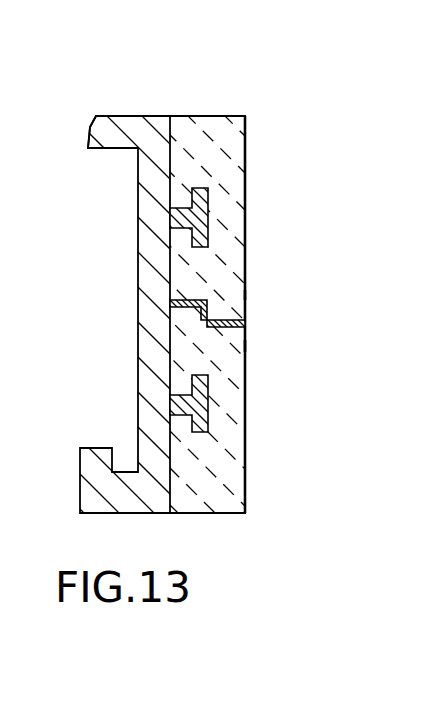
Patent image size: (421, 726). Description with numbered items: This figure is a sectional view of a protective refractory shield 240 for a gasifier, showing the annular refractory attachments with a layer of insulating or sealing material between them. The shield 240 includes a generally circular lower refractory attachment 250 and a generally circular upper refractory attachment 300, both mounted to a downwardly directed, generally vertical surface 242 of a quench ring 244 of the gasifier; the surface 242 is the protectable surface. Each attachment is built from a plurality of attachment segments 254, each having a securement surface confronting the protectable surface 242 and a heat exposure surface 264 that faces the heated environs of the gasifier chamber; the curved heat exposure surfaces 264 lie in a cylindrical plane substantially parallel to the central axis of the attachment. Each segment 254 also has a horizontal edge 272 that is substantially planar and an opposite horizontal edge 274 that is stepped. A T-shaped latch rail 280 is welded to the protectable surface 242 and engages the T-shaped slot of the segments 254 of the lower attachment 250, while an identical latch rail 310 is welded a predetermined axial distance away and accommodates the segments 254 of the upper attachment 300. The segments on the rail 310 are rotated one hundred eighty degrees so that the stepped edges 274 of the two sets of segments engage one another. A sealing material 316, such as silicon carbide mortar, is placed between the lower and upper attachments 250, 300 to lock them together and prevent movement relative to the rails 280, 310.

The protective refractory shield 240 is at (300, 235).
The vertical surface 242 is at (172, 327).
The quench ring 244 is at (120, 113).
The lower refractory attachment 250 is at (238, 518).
The attachment segment 254 is at (250, 131).
The heat exposure surface 264 is at (246, 172).
The horizontal edge 272 is at (202, 114).
The stepped horizontal edge 274 is at (246, 303).
The latch rail 280 is at (210, 405).
The upper refractory attachment 300 is at (243, 99).
The latch rail 310 is at (210, 218).
The sealing material 316 is at (246, 323).